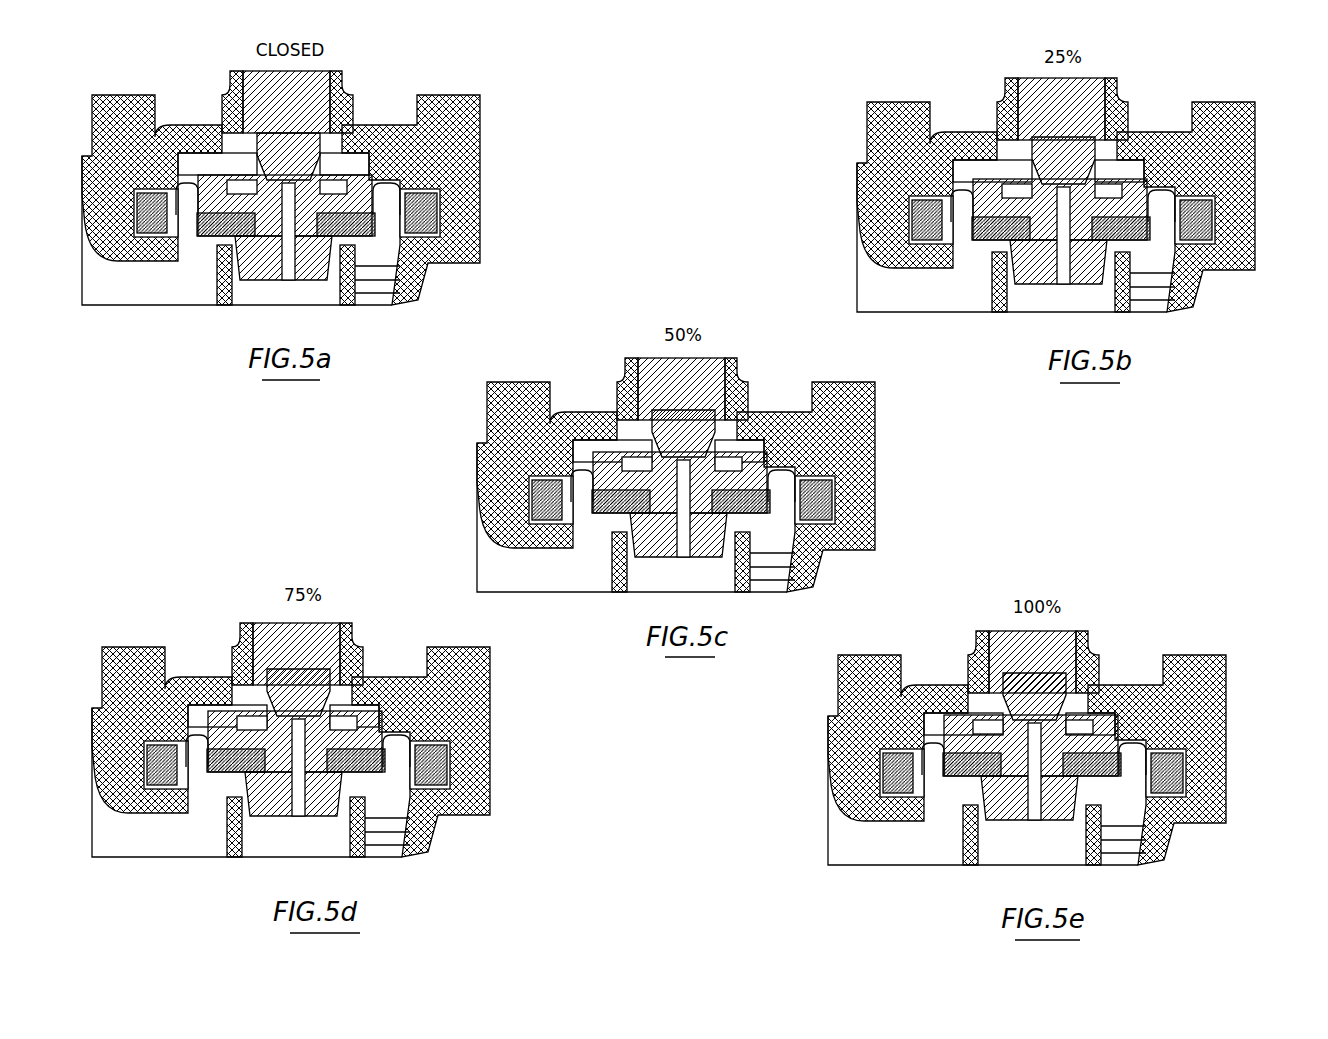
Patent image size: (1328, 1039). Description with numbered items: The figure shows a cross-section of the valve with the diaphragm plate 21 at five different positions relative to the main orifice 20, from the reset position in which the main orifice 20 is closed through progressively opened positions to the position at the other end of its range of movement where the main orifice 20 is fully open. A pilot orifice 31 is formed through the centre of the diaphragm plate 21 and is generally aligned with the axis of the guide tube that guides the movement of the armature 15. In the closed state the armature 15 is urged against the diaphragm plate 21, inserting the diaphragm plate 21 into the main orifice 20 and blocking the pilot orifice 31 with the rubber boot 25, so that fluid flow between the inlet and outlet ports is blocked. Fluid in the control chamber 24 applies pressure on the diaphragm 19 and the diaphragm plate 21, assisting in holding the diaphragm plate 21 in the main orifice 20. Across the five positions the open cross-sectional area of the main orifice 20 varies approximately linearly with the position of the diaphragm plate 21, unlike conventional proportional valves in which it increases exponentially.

In FIG. 5A, the armature 15 is at (280, 97).
In FIG. 5A, the diaphragm 19 is at (445, 152).
In FIG. 5A, the main orifice 20 is at (330, 298).
In FIG. 5B, the main orifice 20 is at (1093, 305).
In FIG. 5C, the main orifice 20 is at (715, 583).
In FIG. 5D, the main orifice 20 is at (335, 847).
In FIG. 5E, the main orifice 20 is at (1070, 852).
In FIG. 5A, the diaphragm plate 21 is at (335, 262).
In FIG. 5B, the diaphragm plate 21 is at (1093, 256).
In FIG. 5C, the diaphragm plate 21 is at (715, 540).
In FIG. 5D, the diaphragm plate 21 is at (340, 803).
In FIG. 5E, the diaphragm plate 21 is at (1085, 810).
In FIG. 5A, the control chamber 24 is at (457, 120).
In FIG. 5A, the rubber boot 25 is at (160, 96).
In FIG. 5A, the pilot orifice 31 is at (245, 267).